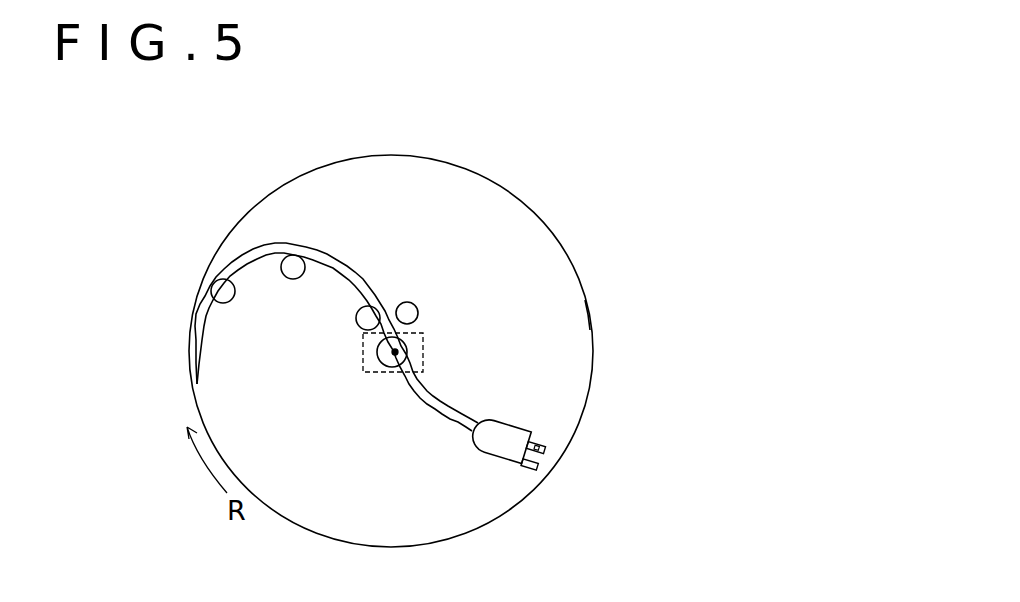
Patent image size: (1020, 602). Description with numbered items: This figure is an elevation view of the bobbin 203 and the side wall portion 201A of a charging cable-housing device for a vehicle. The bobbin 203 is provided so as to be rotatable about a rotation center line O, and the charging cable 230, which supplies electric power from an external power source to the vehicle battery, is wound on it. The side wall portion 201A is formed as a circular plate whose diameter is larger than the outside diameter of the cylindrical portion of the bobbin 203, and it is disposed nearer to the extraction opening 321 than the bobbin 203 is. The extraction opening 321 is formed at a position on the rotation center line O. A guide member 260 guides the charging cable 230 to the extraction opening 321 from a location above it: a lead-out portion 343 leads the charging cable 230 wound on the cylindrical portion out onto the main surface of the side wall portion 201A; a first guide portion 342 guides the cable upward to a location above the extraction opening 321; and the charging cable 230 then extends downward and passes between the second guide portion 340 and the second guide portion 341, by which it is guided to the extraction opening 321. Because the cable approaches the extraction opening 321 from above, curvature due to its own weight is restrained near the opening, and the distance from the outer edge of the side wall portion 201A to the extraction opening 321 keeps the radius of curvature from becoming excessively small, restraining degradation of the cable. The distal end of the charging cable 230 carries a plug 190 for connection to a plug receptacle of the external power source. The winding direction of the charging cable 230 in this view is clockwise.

The bobbin 203 is at (579, 158).
The side wall portion 201A is at (563, 313).
The charging cable 230 is at (259, 249).
The plug 190 is at (507, 437).
The extraction opening 321 is at (425, 361).
The rotation center line O is at (395, 352).
The guide member 260 is at (266, 207).
The second guide portion 340 is at (407, 311).
The second guide portion 341 is at (368, 316).
The first guide portion 342 is at (293, 264).
The lead-out portion 343 is at (222, 292).